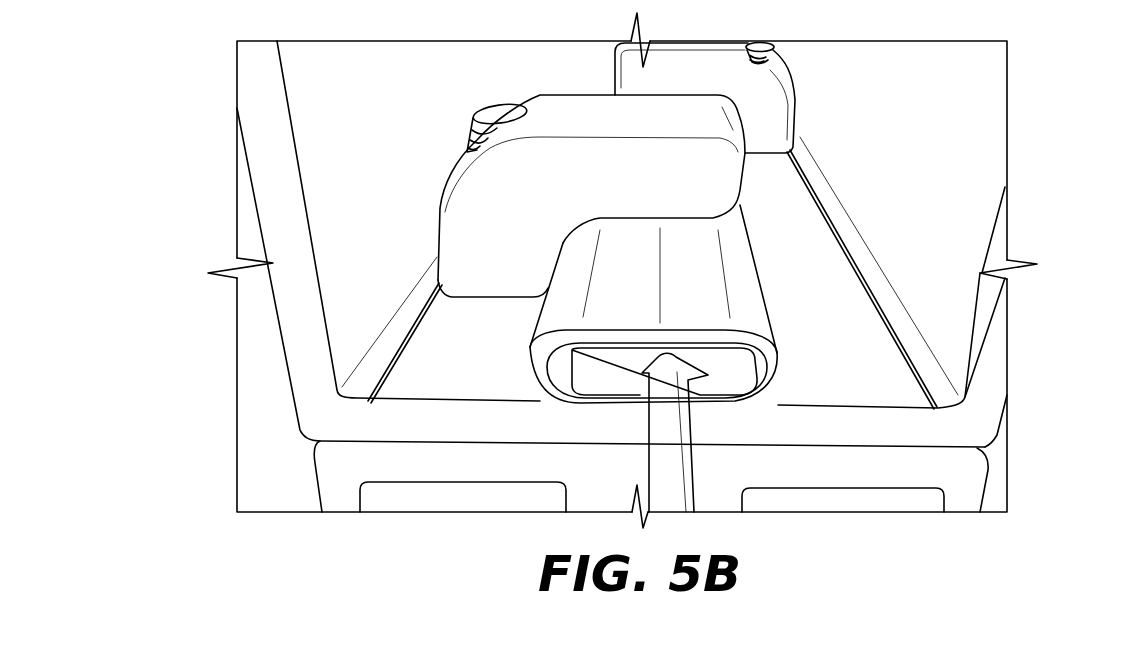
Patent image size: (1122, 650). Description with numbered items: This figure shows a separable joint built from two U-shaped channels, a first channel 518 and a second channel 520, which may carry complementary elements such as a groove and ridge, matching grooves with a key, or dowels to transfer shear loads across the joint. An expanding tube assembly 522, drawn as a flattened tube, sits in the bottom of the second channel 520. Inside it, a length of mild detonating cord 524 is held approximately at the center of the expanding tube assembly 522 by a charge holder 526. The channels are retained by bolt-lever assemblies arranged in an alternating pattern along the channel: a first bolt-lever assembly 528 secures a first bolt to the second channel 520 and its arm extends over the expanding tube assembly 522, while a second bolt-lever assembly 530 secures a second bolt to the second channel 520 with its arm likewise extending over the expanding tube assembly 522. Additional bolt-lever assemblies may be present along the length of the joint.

The first channel 518 is at (317, 477).
The second channel 520 is at (997, 433).
The expanding tube assembly 522 is at (782, 353).
The mild detonating cord 524 is at (648, 451).
The charge holder 526 is at (725, 400).
The first bolt-lever assembly 528 is at (438, 210).
The second bolt-lever assembly 530 is at (797, 105).